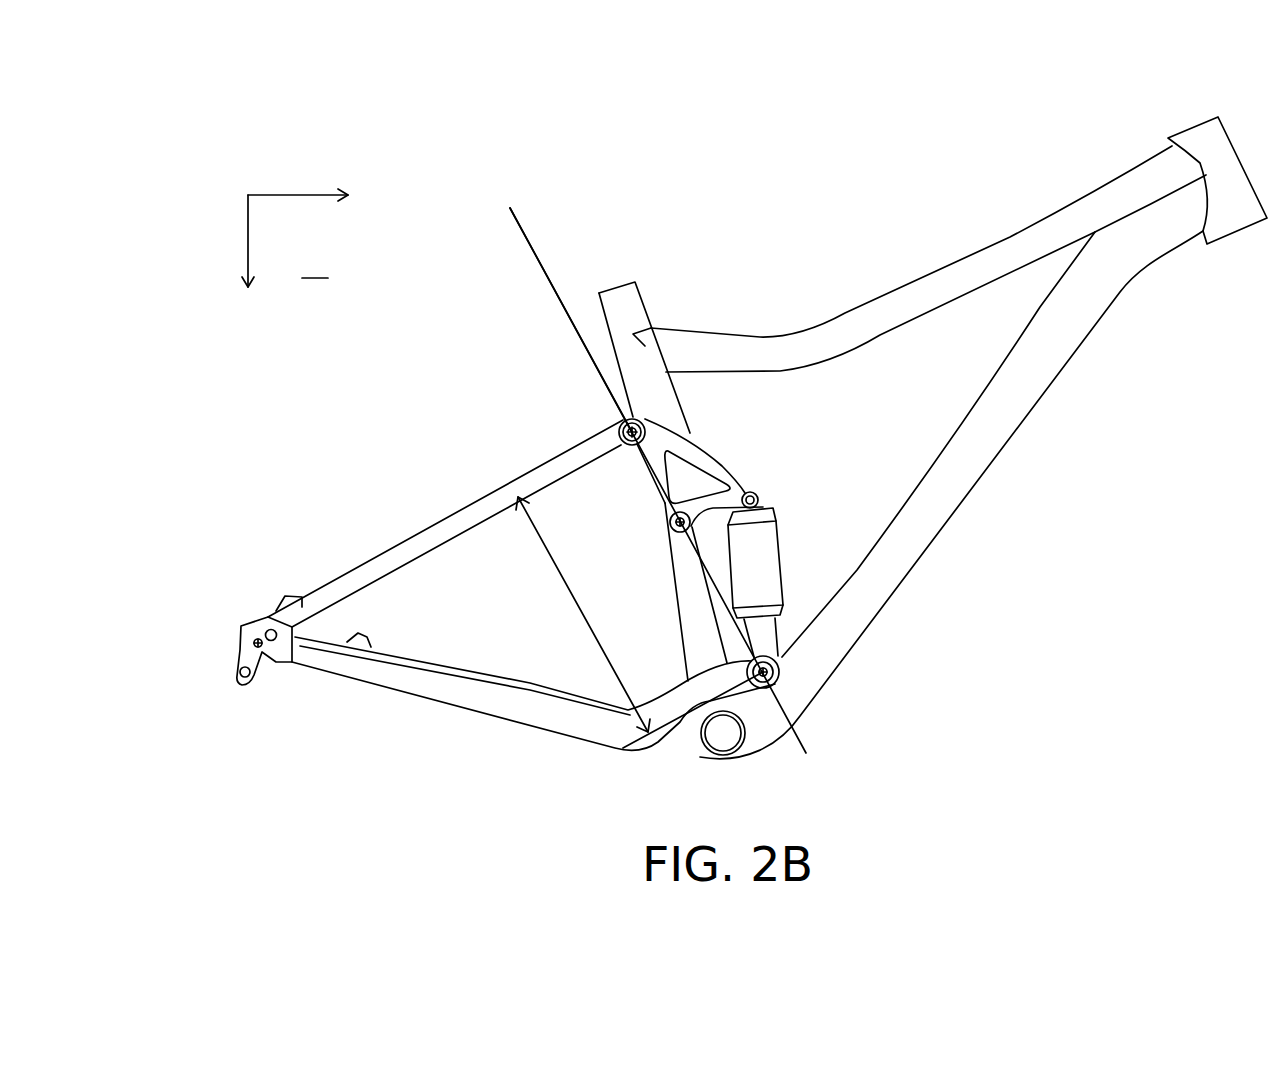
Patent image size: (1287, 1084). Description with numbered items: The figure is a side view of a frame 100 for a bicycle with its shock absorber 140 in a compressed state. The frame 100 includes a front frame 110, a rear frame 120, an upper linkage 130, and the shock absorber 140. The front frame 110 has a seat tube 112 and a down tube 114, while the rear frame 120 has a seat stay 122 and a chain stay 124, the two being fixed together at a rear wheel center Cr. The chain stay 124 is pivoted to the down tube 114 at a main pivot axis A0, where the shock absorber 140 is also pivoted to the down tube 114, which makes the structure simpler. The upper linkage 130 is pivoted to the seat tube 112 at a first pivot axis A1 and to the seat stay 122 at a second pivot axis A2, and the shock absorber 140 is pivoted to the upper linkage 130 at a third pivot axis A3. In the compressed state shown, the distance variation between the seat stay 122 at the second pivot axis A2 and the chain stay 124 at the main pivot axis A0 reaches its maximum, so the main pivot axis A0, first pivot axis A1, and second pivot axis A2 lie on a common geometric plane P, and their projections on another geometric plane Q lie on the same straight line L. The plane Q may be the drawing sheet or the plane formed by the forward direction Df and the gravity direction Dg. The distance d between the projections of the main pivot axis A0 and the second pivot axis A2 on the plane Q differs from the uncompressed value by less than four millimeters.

The frame 100 is at (1197, 652).
The front frame 110 is at (914, 232).
The seat tube 112 is at (633, 300).
The down tube 114 is at (980, 467).
The rear frame 120 is at (375, 517).
The seat stay 122 is at (476, 510).
The chain stay 124 is at (473, 697).
The upper linkage 130 is at (705, 455).
The shock absorber 140 is at (775, 555).
The main pivot axis A0 is at (788, 679).
The first pivot axis A1 is at (669, 530).
The second pivot axis A2 is at (620, 424).
The third pivot axis A3 is at (757, 496).
The rear wheel center Cr is at (260, 648).
The geometric plane P is at (548, 273).
The straight line L is at (530, 248).
The distance d is at (639, 622).
The forward direction Df is at (318, 195).
The gravity direction Dg is at (253, 261).
The geometric plane Q is at (315, 263).